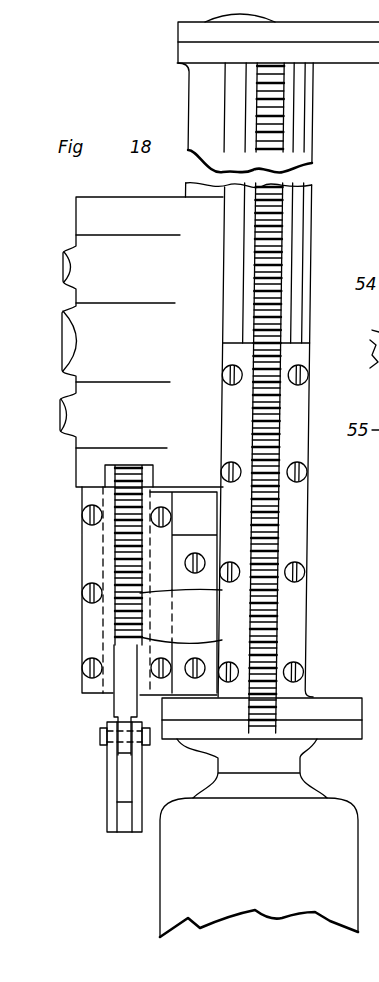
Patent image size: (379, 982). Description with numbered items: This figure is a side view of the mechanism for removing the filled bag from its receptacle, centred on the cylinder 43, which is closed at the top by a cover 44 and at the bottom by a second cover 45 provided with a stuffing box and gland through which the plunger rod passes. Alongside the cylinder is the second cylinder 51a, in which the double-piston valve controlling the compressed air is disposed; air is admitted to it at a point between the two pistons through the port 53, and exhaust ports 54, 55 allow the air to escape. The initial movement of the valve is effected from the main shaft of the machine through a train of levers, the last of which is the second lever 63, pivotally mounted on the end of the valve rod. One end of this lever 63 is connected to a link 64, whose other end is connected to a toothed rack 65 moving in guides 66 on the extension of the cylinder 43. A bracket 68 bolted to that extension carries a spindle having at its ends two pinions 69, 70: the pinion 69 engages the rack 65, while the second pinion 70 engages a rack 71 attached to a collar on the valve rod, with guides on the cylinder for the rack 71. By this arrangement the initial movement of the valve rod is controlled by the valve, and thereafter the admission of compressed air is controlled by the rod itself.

The cover 44 is at (178, 35).
The cylinder 43 is at (318, 237).
The exhaust port 54 is at (62, 269).
The second cylinder 51a is at (141, 342).
The port 53 is at (62, 345).
The exhaust port 55 is at (60, 415).
The rack 71 is at (272, 451).
The pinion 70 is at (270, 651).
The guides 66 is at (169, 541).
The bracket 68 is at (181, 616).
The pinion 69 is at (118, 623).
The toothed rack 65 is at (117, 701).
The link 64 is at (112, 773).
The second lever 63 is at (123, 819).
The second cover 45 is at (348, 739).